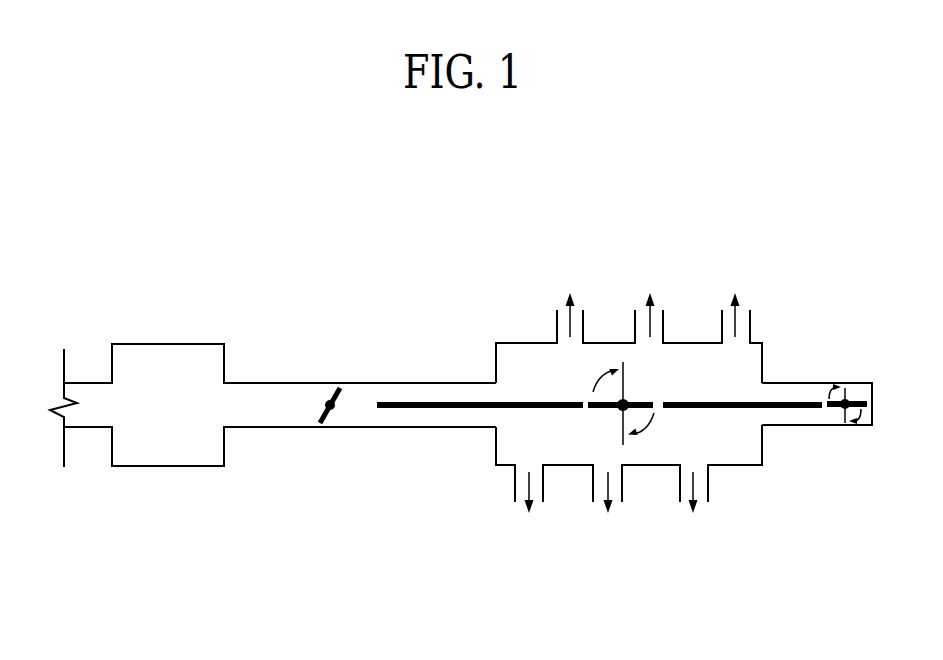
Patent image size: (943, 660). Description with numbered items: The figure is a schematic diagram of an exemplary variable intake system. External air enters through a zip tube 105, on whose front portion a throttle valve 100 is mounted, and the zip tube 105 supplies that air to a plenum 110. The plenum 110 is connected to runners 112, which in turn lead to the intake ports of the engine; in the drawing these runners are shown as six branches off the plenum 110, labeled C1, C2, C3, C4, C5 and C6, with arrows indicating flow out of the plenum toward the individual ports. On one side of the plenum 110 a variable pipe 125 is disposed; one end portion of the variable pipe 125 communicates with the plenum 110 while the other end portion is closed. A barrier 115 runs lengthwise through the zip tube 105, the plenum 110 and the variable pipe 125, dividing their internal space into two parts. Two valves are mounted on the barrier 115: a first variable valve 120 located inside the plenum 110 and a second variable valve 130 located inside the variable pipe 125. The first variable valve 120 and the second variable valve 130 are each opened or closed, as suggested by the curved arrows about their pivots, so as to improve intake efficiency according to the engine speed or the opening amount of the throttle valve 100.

The throttle valve 100 is at (322, 382).
The zip tube 105 is at (422, 383).
The plenum 110 is at (650, 466).
The runners 112 is at (708, 482).
The barrier 115 is at (522, 401).
The first variable valve 120 is at (595, 424).
The variable pipe 125 is at (799, 383).
The second variable valve 130 is at (835, 426).
The cylinder 1 port C1 is at (568, 298).
The cylinder 2 port C2 is at (526, 510).
The cylinder 3 port C3 is at (648, 298).
The cylinder 4 port C4 is at (606, 510).
The cylinder 5 port C5 is at (734, 299).
The cylinder 6 port C6 is at (691, 510).